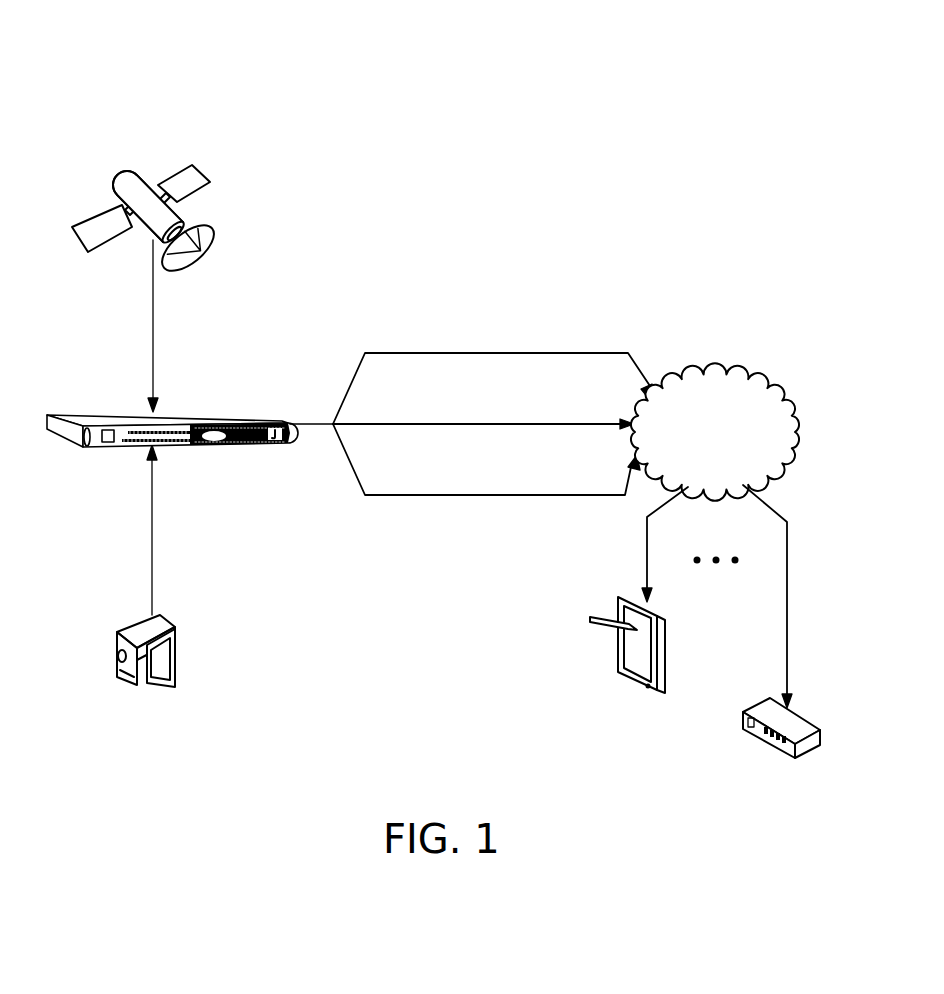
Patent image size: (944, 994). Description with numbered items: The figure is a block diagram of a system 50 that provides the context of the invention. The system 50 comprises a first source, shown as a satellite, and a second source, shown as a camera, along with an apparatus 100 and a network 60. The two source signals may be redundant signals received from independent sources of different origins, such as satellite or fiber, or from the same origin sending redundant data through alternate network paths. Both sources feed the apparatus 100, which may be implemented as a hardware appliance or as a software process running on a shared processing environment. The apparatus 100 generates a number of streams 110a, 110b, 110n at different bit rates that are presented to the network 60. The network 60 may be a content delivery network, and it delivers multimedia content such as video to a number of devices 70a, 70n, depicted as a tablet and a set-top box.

The system 50 is at (338, 37).
The apparatus 100 is at (197, 413).
The stream 110a is at (428, 352).
The stream 110b is at (428, 423).
The stream 110n is at (428, 493).
The network 60 is at (752, 378).
The device 70a is at (620, 597).
The device 70n is at (807, 717).